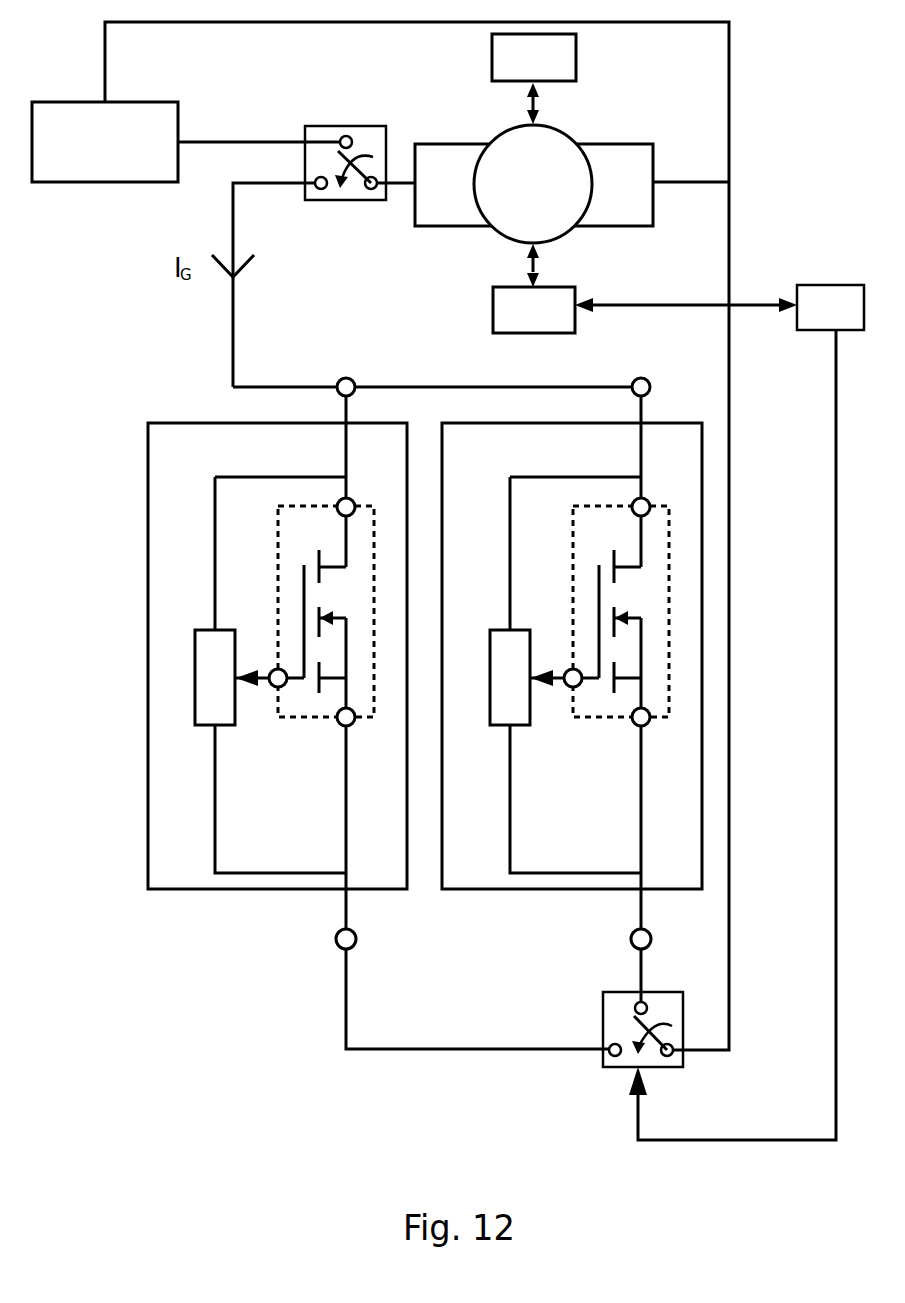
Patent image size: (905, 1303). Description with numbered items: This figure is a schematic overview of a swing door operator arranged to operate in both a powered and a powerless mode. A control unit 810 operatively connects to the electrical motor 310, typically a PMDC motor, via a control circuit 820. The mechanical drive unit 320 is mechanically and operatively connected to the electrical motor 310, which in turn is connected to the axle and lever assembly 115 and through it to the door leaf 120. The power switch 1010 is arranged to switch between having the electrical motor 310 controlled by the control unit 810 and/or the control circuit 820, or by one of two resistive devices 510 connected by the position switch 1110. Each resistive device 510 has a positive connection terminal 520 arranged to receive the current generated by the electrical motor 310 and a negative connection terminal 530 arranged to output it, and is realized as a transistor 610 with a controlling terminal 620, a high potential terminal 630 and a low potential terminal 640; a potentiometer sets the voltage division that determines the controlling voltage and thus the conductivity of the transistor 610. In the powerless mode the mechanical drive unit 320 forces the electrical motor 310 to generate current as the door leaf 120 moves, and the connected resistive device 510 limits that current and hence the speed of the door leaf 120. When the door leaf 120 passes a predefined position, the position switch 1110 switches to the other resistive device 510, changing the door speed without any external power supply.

The control circuit 820 is at (105, 142).
The control unit 810 is at (105, 142).
The power switch 1010 is at (358, 126).
The mechanical drive unit 320 is at (534, 57).
The electrical motor 310 is at (514, 194).
The axle and lever assembly 115 is at (534, 310).
The door leaf 120 is at (830, 307).
The resistive device 510 is at (258, 461).
The positive connection terminal 520 is at (354, 380).
The negative connection terminal 530 is at (357, 936).
The transistor 610 is at (473, 611).
The controlling terminal 620 is at (273, 668).
The high potential terminal 630 is at (350, 498).
The low potential terminal 640 is at (340, 725).
The position switch 1110 is at (600, 1022).